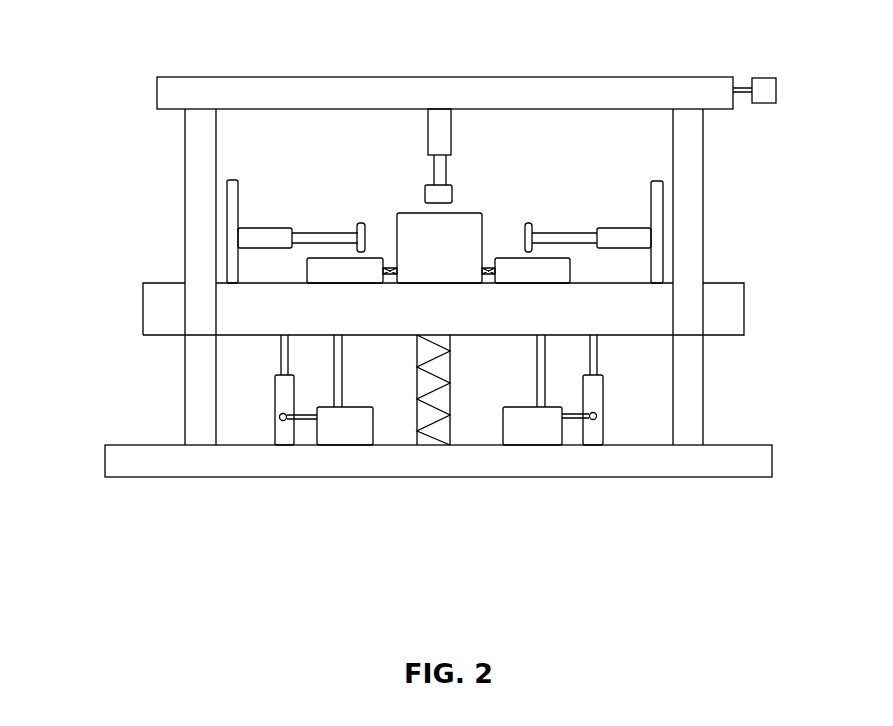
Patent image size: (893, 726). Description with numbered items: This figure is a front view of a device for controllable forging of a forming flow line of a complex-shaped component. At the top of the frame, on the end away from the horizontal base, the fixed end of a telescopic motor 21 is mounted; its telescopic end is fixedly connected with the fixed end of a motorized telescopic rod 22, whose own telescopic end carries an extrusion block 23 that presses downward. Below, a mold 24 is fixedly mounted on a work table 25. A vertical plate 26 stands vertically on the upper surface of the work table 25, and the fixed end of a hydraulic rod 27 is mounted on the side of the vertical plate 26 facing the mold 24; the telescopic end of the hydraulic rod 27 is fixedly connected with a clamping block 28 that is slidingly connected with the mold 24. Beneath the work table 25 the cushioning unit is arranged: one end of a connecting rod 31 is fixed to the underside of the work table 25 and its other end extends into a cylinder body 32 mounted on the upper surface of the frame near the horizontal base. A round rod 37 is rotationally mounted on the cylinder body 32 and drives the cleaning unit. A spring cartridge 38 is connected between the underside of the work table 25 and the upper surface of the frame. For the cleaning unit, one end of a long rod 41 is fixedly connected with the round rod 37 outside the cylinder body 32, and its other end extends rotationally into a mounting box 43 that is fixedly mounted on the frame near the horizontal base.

The telescopic motor 21 is at (762, 90).
The motorized telescopic rod 22 is at (440, 130).
The extrusion block 23 is at (447, 187).
The mold 24 is at (440, 258).
The work table 25 is at (605, 315).
The vertical plate 26 is at (663, 197).
The hydraulic rod 27 is at (263, 237).
The clamping block 28 is at (362, 237).
The connecting rod 31 is at (275, 352).
The cylinder body 32 is at (275, 404).
The round rod 37 is at (278, 417).
The spring cartridge 38 is at (450, 405).
The long rod 41 is at (580, 413).
The mounting box 43 is at (538, 436).